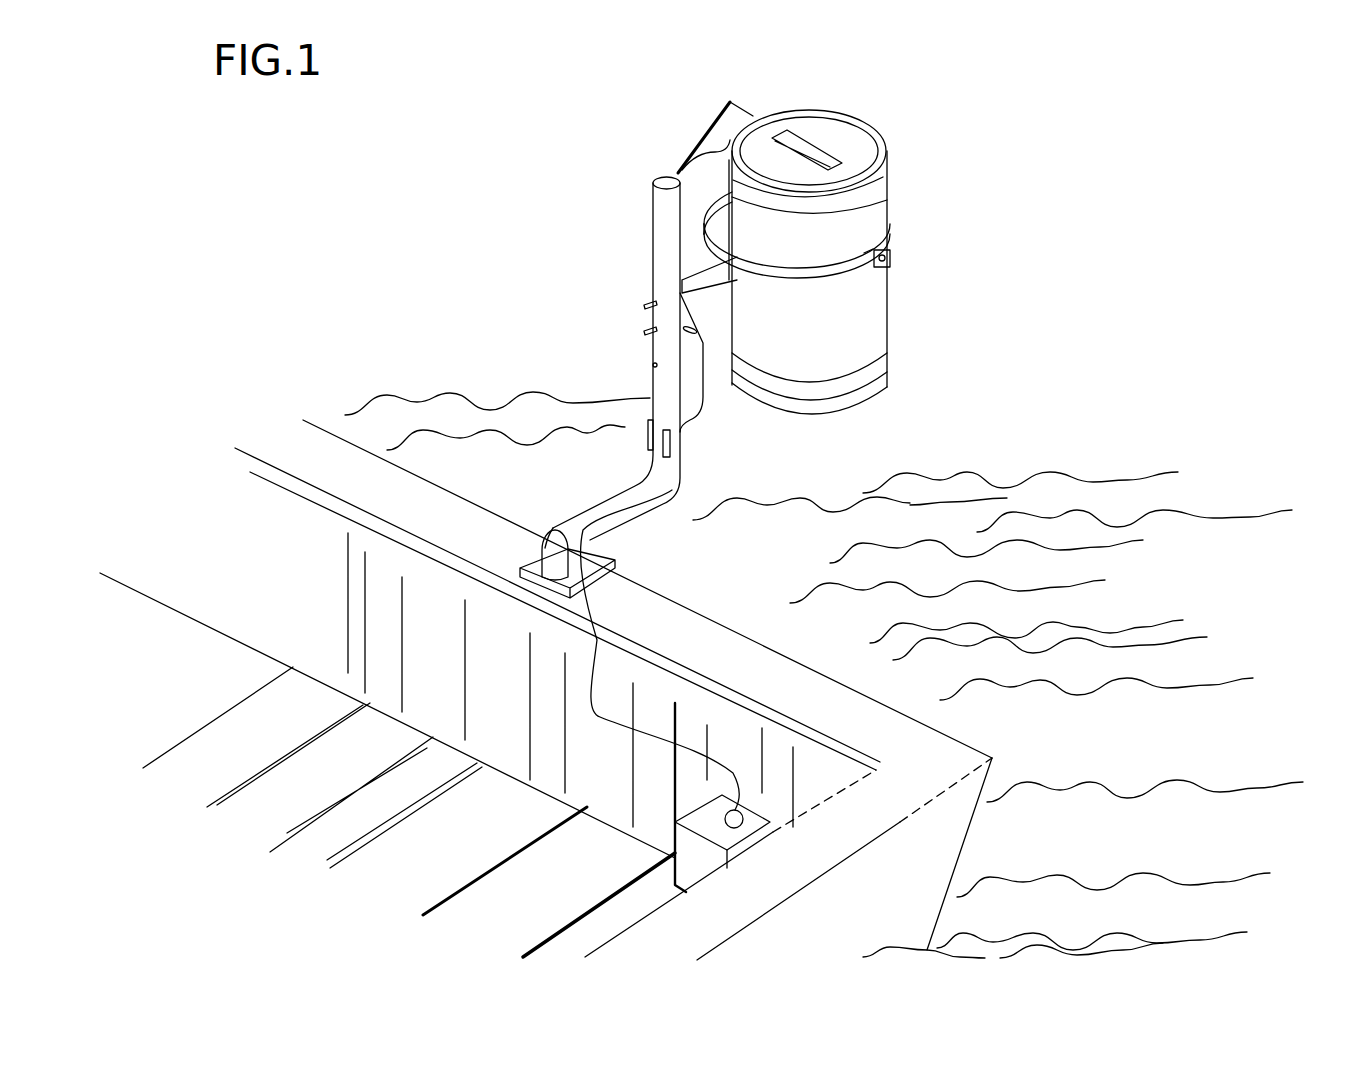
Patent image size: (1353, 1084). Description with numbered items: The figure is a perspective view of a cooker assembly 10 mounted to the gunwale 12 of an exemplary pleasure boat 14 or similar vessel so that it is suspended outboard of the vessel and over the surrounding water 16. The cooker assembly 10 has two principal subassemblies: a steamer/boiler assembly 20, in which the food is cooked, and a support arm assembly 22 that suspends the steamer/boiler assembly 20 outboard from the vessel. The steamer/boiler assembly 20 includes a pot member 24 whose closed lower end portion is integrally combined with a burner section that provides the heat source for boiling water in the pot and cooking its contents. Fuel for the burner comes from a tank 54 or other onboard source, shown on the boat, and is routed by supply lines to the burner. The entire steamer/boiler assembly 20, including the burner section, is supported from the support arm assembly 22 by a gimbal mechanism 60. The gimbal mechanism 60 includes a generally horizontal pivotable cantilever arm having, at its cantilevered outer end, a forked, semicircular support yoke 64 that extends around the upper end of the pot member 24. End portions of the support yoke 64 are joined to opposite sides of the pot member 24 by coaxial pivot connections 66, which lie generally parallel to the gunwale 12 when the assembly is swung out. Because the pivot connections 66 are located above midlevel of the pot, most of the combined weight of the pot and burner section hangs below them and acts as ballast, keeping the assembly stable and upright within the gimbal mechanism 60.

The cooker assembly 10 is at (611, 141).
The gunwale 12 is at (638, 610).
The pleasure boat 14 is at (319, 373).
The water 16 is at (1200, 579).
The steamer/boiler assembly 20 is at (888, 188).
The support arm assembly 22 is at (645, 222).
The pot member 24 is at (868, 325).
The tank 54 is at (685, 857).
The gimbal mechanism 60 is at (722, 316).
The support yoke 64 is at (855, 262).
The pivot connections 66 is at (890, 258).